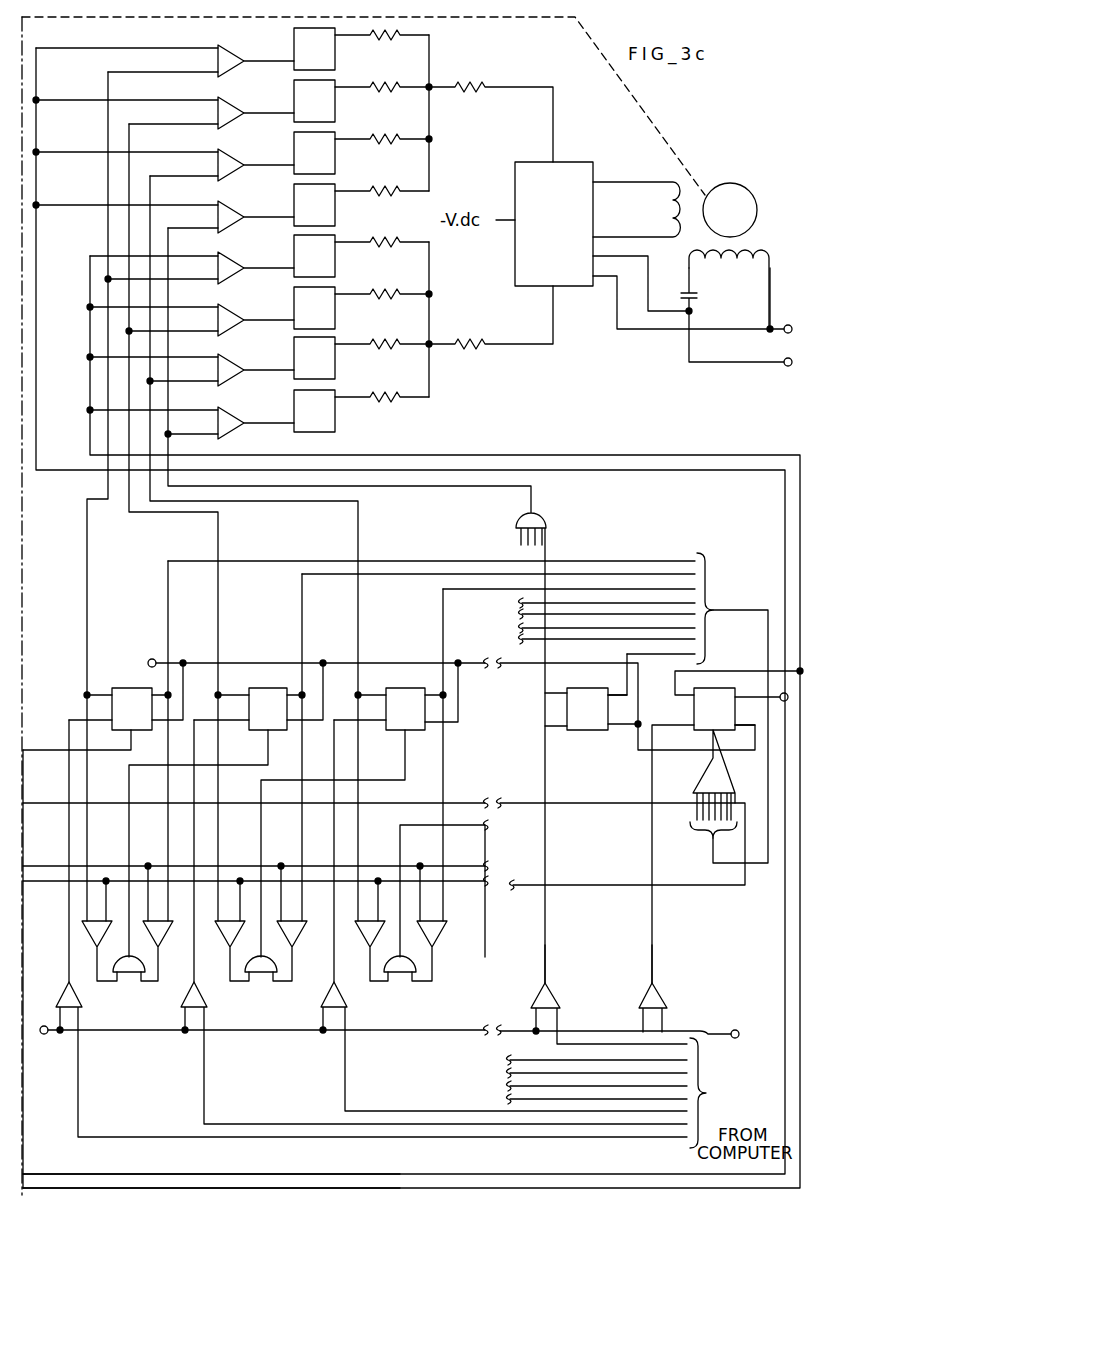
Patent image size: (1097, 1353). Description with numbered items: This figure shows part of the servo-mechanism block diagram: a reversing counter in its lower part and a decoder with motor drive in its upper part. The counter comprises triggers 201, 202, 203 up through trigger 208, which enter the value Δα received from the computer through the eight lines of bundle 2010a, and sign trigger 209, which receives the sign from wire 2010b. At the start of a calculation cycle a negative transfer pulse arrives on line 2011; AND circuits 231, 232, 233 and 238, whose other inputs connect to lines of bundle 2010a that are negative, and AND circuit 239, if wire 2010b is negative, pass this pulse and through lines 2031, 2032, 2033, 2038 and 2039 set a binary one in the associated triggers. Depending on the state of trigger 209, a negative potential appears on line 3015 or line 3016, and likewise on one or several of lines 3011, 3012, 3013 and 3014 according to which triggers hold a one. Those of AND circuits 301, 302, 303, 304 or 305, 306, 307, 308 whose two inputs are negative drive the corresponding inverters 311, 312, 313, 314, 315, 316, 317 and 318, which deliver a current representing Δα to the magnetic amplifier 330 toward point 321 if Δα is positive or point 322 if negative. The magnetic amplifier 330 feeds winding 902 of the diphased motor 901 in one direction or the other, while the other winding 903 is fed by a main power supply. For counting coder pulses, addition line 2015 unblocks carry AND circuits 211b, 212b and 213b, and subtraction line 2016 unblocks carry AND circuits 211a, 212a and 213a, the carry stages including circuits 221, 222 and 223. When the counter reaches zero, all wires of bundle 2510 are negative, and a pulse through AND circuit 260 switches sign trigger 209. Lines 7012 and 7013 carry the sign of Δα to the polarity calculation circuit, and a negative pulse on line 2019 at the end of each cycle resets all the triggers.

The logical AND circuit 301 is at (228, 62).
The logical AND circuit 302 is at (228, 114).
The logical AND circuit 303 is at (228, 166).
The logical AND circuit 304 is at (228, 218).
The logical AND circuit 305 is at (228, 269).
The logical AND circuit 306 is at (228, 321).
The logical AND circuit 307 is at (228, 371).
The logical AND circuit 308 is at (228, 424).
The inverter 311 is at (336, 66).
The inverter 312 is at (336, 118).
The inverter 313 is at (336, 170).
The inverter 314 is at (336, 222).
The inverter 315 is at (336, 273).
The inverter 316 is at (336, 325).
The inverter 317 is at (336, 375).
The inverter 318 is at (336, 428).
The point 321 is at (434, 86).
The point 322 is at (432, 342).
The magnetic amplifier 330 is at (527, 167).
The diphased motor 901 is at (745, 197).
The winding 902 is at (672, 186).
The winding 903 is at (748, 258).
The line 3011 is at (86, 532).
The line 3012 is at (217, 532).
The line 3013 is at (357, 532).
The line 3014 is at (531, 503).
The line 3015 is at (690, 471).
The line 3016 is at (626, 459).
The bundle 2510 is at (757, 611).
The line 2019 is at (160, 663).
The trigger 201 is at (118, 712).
The trigger 202 is at (272, 695).
The trigger 203 is at (409, 695).
The trigger 208 is at (567, 717).
The sign trigger 209 is at (694, 717).
The AND circuit 260 is at (708, 792).
The line 2032 is at (192, 761).
The line 2033 is at (332, 761).
The line 2031 is at (78, 943).
The addition line 2015 is at (50, 868).
The subtraction line 2016 is at (56, 884).
The carry AND circuit 211a is at (92, 937).
The carry AND circuit 211b is at (155, 933).
The carry AND circuit 212a is at (229, 949).
The carry AND circuit 212b is at (292, 938).
The carry AND circuit 213a is at (368, 951).
The carry AND circuit 213b is at (433, 938).
The AND gate 221 is at (129, 968).
The AND gate 222 is at (261, 968).
The AND gate 223 is at (400, 968).
The AND circuit 231 is at (78, 998).
The AND circuit 232 is at (186, 1006).
The AND circuit 233 is at (337, 1006).
The AND circuit 238 is at (553, 1002).
The AND circuit 239 is at (660, 1002).
The line 2038 is at (541, 949).
The line 2039 is at (648, 949).
The line 2011 is at (462, 1030).
The bundle 2010a is at (706, 1093).
The wire 2010b is at (705, 1036).
The line 7012 is at (52, 1176).
The line 7013 is at (313, 1190).